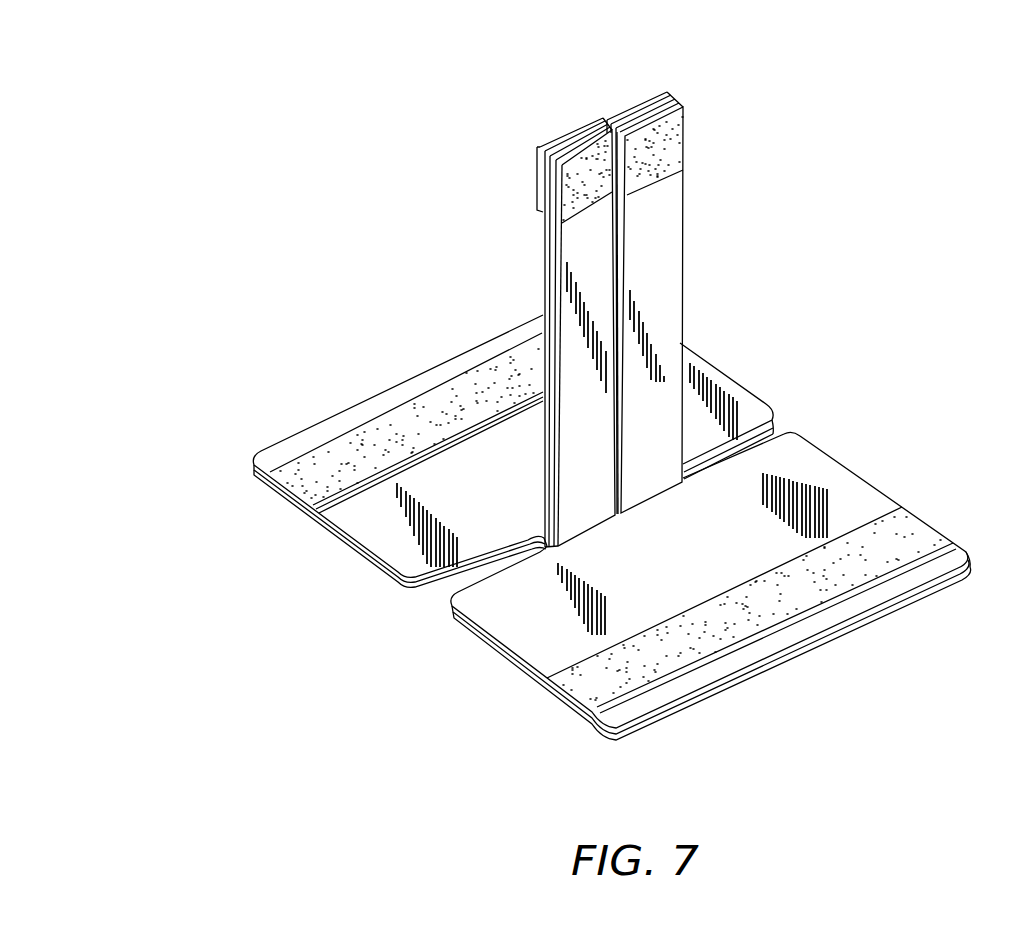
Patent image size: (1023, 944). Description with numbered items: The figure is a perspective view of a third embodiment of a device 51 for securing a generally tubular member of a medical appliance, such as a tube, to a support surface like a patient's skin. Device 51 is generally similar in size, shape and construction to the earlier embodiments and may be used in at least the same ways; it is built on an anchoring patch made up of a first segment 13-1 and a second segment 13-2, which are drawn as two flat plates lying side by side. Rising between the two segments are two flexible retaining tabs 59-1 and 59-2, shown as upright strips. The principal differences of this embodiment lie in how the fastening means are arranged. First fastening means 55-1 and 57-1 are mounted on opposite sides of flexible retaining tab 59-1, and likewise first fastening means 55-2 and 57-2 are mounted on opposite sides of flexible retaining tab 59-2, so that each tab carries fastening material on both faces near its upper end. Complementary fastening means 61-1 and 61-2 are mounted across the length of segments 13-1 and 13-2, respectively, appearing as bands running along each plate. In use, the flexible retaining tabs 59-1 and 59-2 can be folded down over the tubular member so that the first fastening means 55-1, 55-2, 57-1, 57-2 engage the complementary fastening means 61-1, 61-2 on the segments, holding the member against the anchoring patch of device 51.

The device 51 is at (283, 306).
The first segment 13-1 is at (875, 480).
The second segment 13-2 is at (743, 385).
The first fastening means 55-1 is at (583, 196).
The first fastening means 55-2 is at (662, 173).
The first fastening means 57-1 is at (554, 144).
The first fastening means 57-2 is at (623, 112).
The flexible retaining tab 59-1 is at (545, 282).
The flexible retaining tab 59-2 is at (682, 291).
The complementary fastening means 61-1 is at (712, 625).
The complementary fastening means 61-2 is at (390, 440).